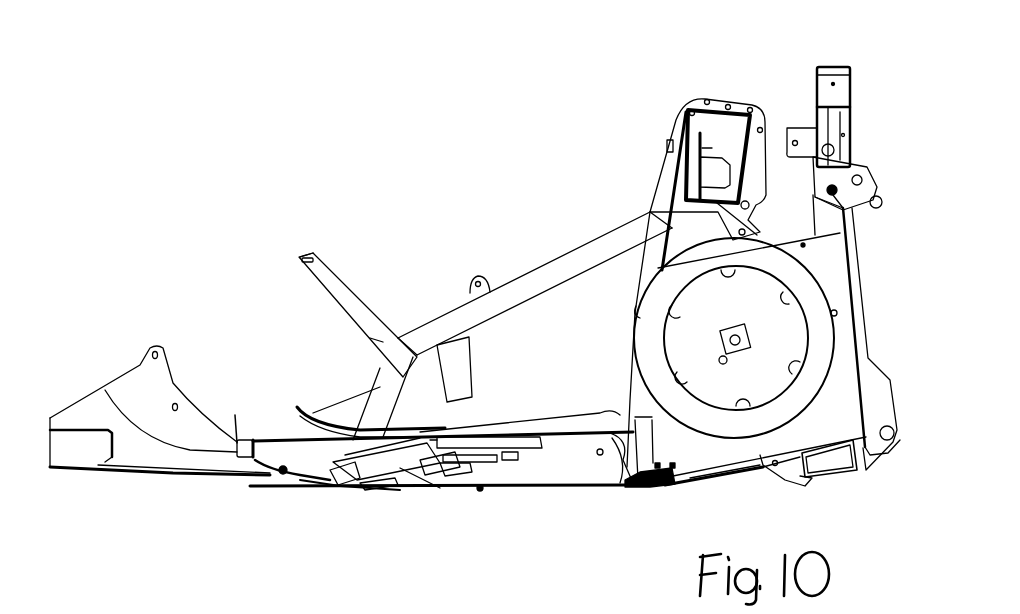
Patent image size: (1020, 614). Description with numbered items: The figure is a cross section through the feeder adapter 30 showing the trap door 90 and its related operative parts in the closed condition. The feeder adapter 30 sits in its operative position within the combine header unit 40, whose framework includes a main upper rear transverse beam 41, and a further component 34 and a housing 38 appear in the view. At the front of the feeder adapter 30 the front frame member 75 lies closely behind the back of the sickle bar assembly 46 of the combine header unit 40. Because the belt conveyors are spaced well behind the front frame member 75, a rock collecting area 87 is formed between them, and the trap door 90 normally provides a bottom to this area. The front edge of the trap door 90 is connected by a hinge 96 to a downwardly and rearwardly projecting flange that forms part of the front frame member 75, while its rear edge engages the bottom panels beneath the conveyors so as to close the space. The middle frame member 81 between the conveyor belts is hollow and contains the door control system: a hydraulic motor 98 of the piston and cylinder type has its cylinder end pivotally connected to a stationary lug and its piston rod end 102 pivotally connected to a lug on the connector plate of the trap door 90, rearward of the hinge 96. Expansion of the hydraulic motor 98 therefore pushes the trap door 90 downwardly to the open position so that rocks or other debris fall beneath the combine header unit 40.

The feeder adapter 30 is at (418, 217).
The combine header unit 40 is at (555, 257).
The main upper rear transverse beam 41 is at (720, 100).
The hitch post 34 is at (853, 97).
The front frame member 75 is at (105, 390).
The sickle bar assembly 46 is at (97, 477).
The rock collecting area 87 is at (278, 418).
The middle frame member 81 is at (300, 437).
The hinge 96 is at (283, 472).
The piston rod end 102 is at (352, 490).
The trap door 90 is at (385, 497).
The hydraulic motor 98 is at (420, 485).
The housing 38 is at (763, 347).